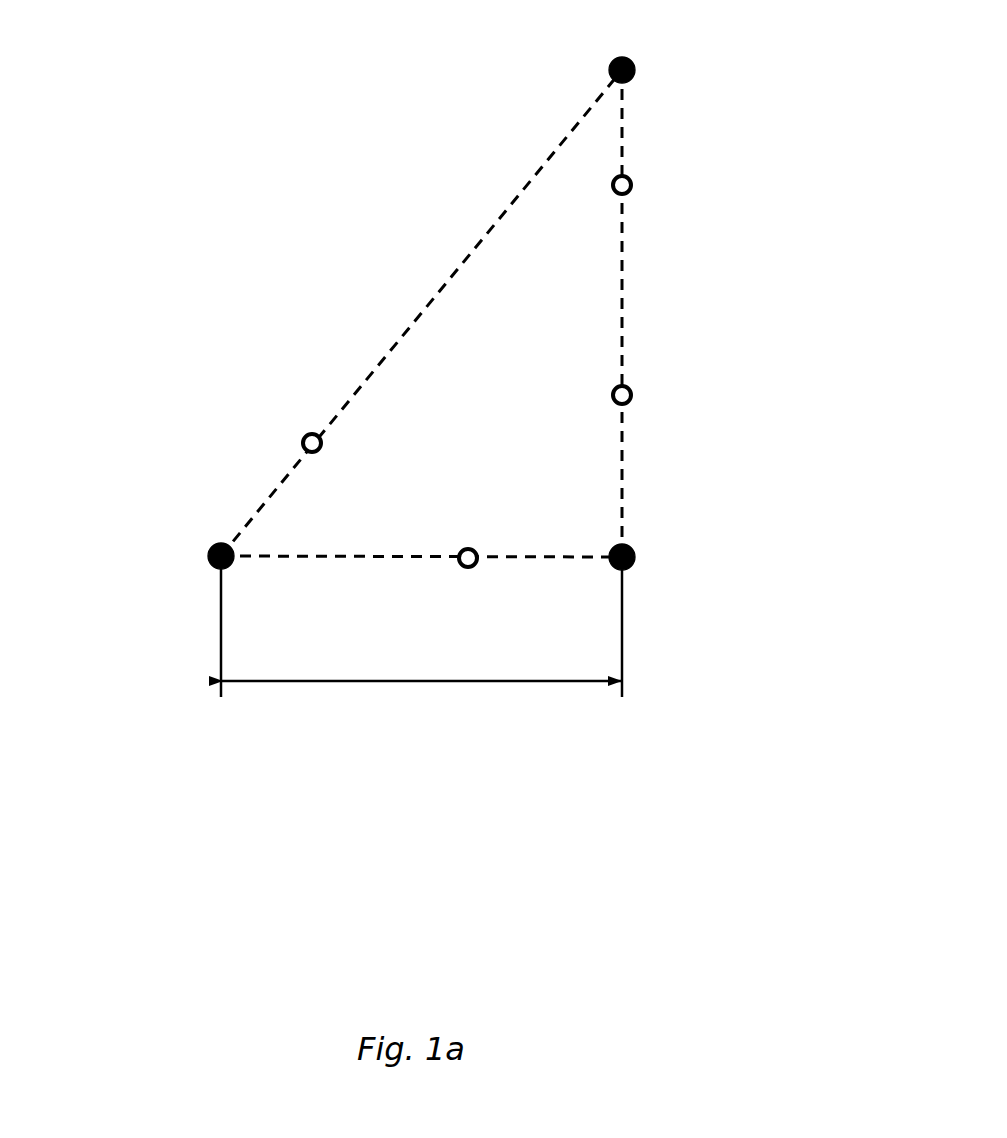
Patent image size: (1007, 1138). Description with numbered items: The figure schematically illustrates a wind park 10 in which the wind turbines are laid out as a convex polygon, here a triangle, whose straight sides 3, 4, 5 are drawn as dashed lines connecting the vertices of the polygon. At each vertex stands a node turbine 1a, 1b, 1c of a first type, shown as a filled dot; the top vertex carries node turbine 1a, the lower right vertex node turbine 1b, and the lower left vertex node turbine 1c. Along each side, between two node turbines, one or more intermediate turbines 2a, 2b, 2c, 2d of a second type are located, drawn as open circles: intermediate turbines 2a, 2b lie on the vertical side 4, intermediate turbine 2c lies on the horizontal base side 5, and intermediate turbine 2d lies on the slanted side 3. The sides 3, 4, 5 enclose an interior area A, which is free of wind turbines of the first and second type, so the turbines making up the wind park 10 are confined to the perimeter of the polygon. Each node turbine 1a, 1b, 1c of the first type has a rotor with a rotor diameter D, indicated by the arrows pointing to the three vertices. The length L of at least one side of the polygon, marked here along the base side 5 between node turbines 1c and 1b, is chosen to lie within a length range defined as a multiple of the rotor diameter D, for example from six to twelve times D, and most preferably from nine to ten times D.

The wind park 10 is at (343, 150).
The node turbine 1a is at (648, 71).
The node turbine 1b is at (649, 556).
The node turbine 1c is at (198, 555).
The intermediate turbine 2a is at (650, 184).
The intermediate turbine 2b is at (651, 394).
The intermediate turbine 2c is at (467, 533).
The intermediate turbine 2d is at (283, 445).
The straight side 3 is at (405, 317).
The straight side 4 is at (627, 322).
The straight side 5 is at (347, 562).
The rotor diameter D is at (638, 47).
The interior area A is at (471, 394).
The length of side L is at (421, 633).